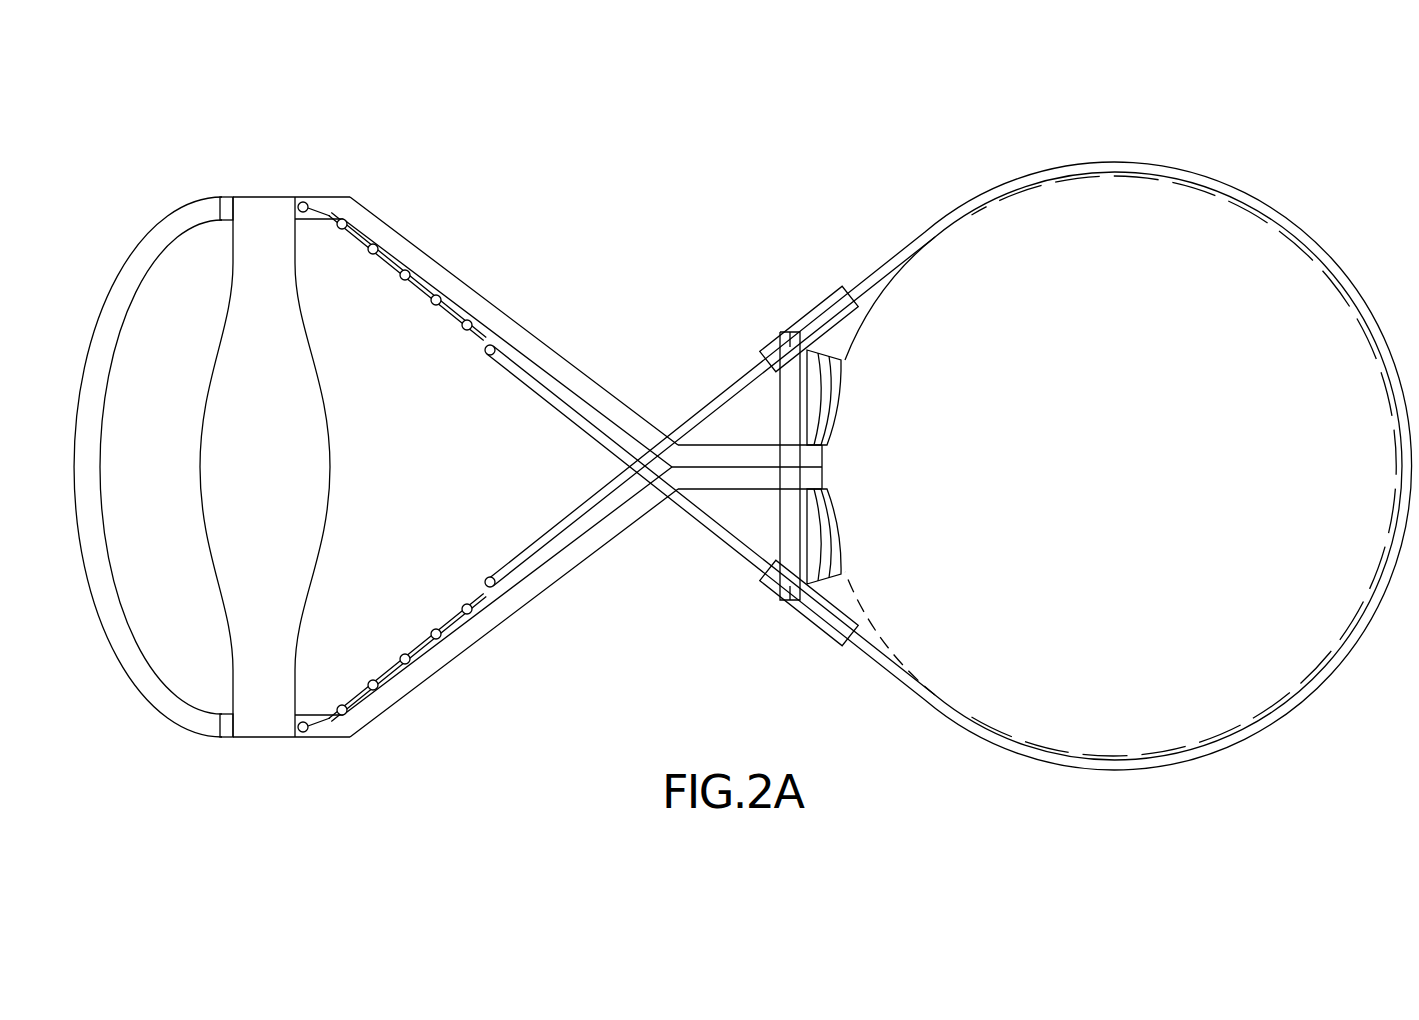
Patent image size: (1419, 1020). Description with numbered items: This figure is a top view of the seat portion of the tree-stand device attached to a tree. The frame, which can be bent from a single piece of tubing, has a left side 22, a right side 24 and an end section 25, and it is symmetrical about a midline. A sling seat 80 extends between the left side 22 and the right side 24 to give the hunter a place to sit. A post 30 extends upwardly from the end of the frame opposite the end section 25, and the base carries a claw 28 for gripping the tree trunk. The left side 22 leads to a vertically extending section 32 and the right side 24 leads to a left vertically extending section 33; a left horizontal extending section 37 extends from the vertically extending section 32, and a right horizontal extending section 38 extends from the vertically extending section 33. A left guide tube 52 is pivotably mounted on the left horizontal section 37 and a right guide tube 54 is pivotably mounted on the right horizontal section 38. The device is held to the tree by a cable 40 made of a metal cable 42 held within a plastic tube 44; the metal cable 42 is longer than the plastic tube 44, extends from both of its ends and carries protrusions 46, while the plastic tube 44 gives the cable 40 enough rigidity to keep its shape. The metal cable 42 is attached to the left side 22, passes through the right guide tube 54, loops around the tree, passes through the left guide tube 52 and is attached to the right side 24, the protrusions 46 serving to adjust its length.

The left side 22 is at (540, 322).
The right side 24 is at (467, 648).
The end section 25 is at (148, 247).
The claw 28 is at (832, 562).
The post 30 is at (830, 415).
The left vertically extending section 32 is at (824, 455).
The left vertically extending section 33 is at (828, 490).
The left horizontal extending section 37 is at (778, 400).
The right horizontal extending section 38 is at (780, 535).
The cable 40 is at (1030, 175).
The metal cable 42 is at (448, 318).
The plastic tube 44 is at (565, 412).
The protrusions 46 is at (422, 612).
The left guide tube 52 is at (812, 305).
The right guide tube 54 is at (806, 620).
The sling seat 80 is at (260, 217).